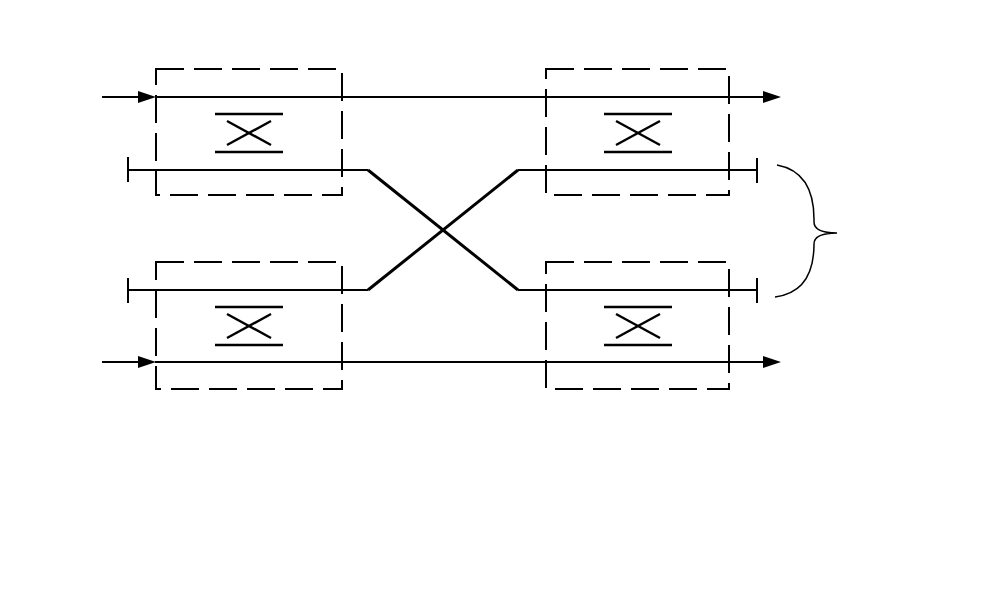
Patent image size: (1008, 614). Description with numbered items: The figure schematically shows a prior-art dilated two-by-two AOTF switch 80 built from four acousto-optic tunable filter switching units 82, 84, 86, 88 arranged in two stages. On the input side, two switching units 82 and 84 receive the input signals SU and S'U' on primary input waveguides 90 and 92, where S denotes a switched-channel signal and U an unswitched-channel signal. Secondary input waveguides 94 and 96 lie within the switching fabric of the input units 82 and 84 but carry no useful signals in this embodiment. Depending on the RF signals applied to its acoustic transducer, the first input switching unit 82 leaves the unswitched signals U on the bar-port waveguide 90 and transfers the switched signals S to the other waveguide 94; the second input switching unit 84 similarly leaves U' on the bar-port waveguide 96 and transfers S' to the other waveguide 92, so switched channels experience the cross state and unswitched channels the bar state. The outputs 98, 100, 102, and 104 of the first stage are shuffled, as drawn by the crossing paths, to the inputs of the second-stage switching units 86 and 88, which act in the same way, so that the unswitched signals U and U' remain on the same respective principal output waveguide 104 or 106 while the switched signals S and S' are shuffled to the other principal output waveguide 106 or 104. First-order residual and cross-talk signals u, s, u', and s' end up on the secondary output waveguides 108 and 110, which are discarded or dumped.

The dilated 2×2 AOTF switch 80 is at (450, 410).
The first input switching unit 82 is at (227, 69).
The second input switching unit 84 is at (225, 389).
The second-stage switching unit 86 is at (630, 69).
The second-stage switching unit 88 is at (637, 391).
The primary input waveguide 90 is at (125, 92).
The primary input waveguide 92 is at (125, 357).
The secondary input waveguide 94 is at (140, 168).
The secondary input waveguide 96 is at (140, 288).
The output of first-stage switching unit 98 is at (357, 97).
The output of first-stage switching unit 100 is at (390, 185).
The output of first-stage switching unit 102 is at (355, 363).
The principal output waveguide 104 is at (748, 93).
The principal output waveguide 106 is at (748, 358).
The secondary output waveguide 108 is at (737, 168).
The secondary output waveguide 110 is at (737, 288).